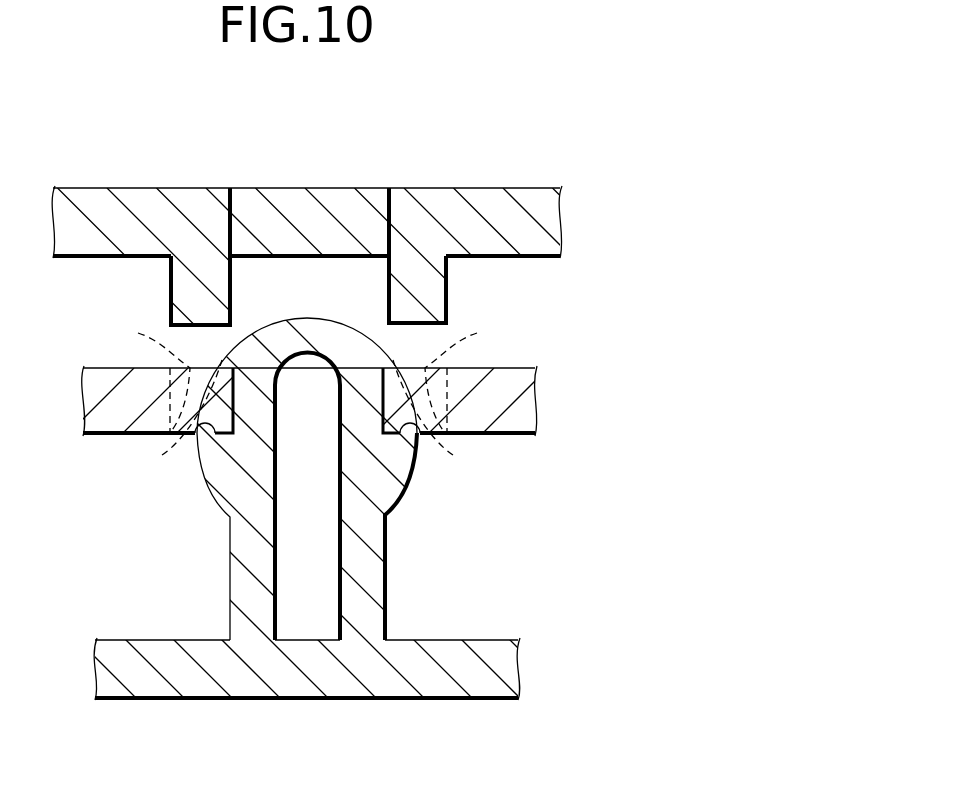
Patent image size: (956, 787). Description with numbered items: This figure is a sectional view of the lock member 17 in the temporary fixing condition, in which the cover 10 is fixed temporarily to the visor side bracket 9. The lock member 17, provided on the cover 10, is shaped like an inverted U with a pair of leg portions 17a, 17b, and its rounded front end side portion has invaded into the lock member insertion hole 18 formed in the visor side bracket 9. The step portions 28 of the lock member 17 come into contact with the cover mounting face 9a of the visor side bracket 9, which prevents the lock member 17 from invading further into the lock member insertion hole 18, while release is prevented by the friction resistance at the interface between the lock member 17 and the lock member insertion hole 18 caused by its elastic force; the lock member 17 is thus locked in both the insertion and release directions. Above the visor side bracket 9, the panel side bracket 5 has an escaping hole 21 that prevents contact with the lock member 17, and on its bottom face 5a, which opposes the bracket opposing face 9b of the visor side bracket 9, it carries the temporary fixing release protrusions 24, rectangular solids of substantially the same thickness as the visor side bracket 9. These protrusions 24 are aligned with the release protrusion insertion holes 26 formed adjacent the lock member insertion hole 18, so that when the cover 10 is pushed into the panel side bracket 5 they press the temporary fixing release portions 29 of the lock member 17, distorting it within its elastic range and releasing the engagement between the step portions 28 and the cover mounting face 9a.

The panel side bracket 5 is at (369, 223).
The bottom face 5a is at (553, 258).
The visor side bracket 9 is at (335, 410).
The cover mounting face 9a is at (82, 443).
The bracket opposing face 9b is at (115, 367).
The cover 10 is at (473, 670).
The lock member 17 is at (332, 481).
The leg portion 17a is at (242, 577).
The leg portion 17b is at (355, 580).
The lock member insertion hole 18 is at (383, 378).
The escaping hole 21 is at (385, 210).
The temporary fixing release protrusion 24 is at (185, 280).
The release protrusion insertion hole 26 is at (306, 363).
The step portion 28 is at (197, 436).
The temporary fixing release portion 29 is at (166, 452).